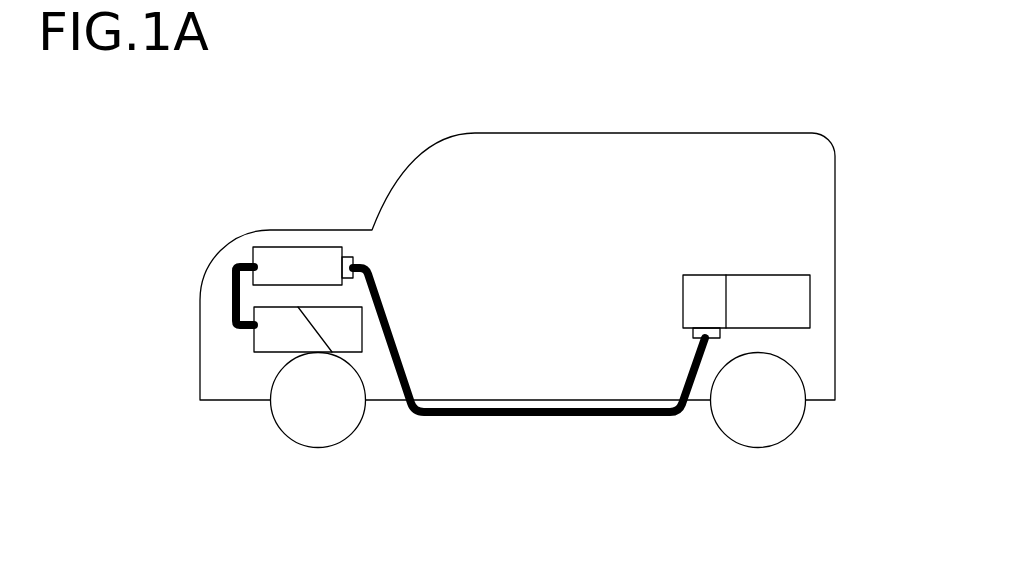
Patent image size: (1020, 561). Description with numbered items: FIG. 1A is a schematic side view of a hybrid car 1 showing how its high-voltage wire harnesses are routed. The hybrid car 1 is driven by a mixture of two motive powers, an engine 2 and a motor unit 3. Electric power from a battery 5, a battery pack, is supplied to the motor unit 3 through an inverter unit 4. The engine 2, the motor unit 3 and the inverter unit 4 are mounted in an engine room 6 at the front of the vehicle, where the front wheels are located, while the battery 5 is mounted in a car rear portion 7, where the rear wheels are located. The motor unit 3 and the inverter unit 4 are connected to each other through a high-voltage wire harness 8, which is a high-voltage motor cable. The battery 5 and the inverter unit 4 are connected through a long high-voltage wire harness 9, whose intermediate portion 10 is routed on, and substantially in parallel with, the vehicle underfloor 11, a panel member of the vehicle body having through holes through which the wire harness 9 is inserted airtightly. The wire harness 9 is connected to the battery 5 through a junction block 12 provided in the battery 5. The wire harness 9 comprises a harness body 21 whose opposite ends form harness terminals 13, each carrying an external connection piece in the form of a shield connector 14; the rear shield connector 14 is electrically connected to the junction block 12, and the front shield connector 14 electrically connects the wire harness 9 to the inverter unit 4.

The hybrid car 1 is at (571, 123).
The engine 2 is at (357, 340).
The motor unit 3 is at (265, 338).
The inverter unit 4 is at (276, 258).
The battery 5 is at (773, 287).
The engine room 6 is at (217, 375).
The car rear portion 7 is at (818, 370).
The high-voltage wire harness 8 is at (230, 302).
The high-voltage wire harness 9 is at (450, 423).
The intermediate portion 10 is at (562, 420).
The vehicle underfloor 11 is at (627, 402).
The junction block 12 is at (705, 287).
The harness terminal 13 is at (375, 270).
The shield connector 14 is at (358, 254).
The harness body 21 is at (407, 353).